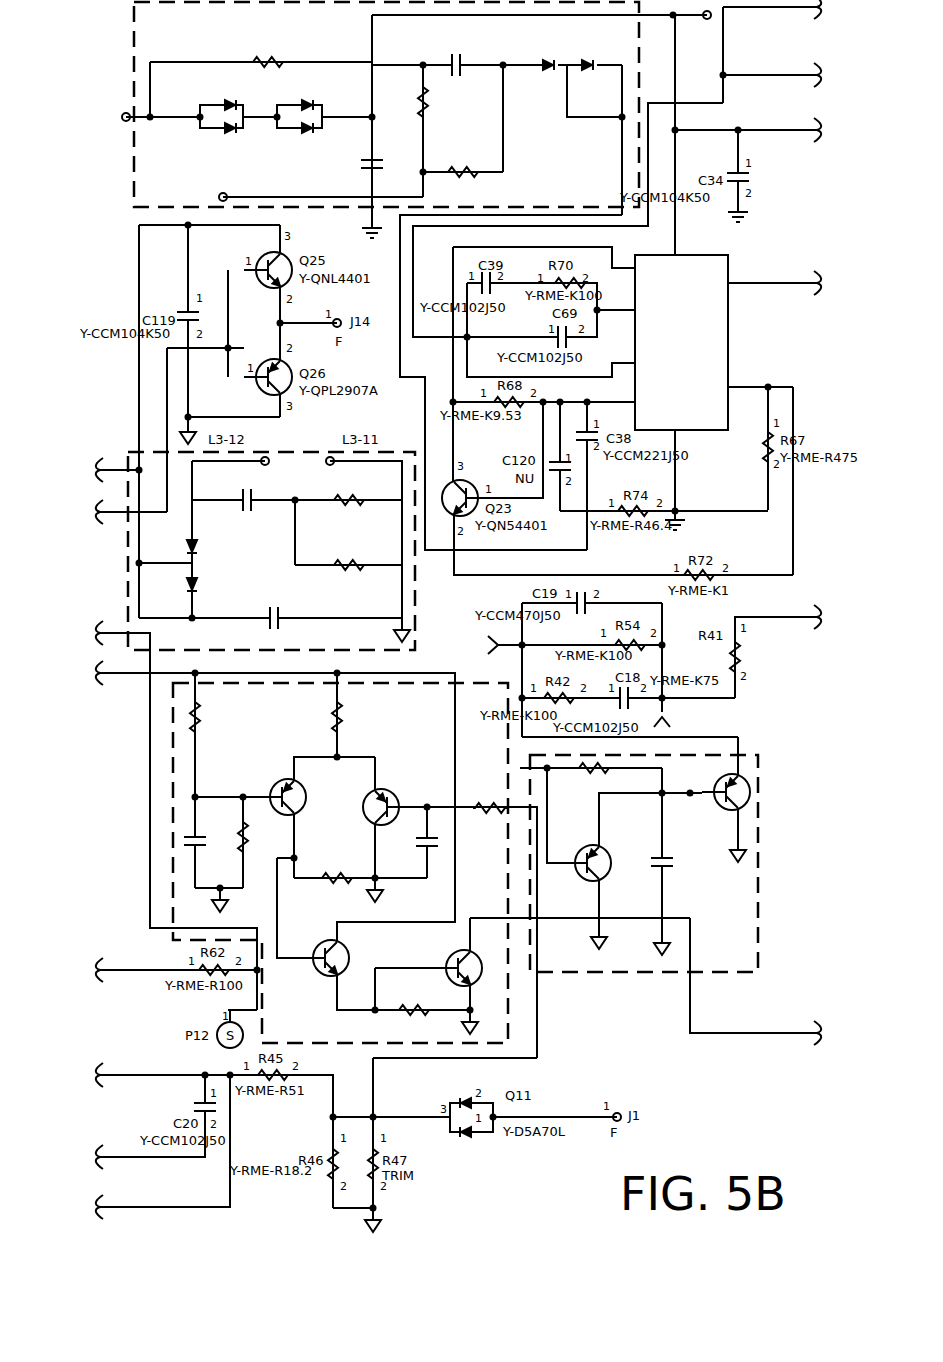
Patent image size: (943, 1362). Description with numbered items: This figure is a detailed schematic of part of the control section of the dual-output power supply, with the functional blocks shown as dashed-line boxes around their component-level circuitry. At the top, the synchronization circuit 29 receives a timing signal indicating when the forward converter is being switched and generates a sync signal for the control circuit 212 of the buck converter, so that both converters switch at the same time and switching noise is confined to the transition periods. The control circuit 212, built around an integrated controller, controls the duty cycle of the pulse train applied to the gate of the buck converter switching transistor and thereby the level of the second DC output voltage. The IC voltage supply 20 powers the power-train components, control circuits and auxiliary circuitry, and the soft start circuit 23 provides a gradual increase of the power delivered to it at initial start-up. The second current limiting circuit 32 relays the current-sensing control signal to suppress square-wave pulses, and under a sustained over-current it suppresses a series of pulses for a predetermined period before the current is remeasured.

The synchronization circuit 29 is at (150, 37).
The IC voltage supply 20 is at (383, 597).
The control circuit 212 is at (708, 418).
The second current limiting circuit 32 is at (503, 1030).
The soft start circuit 23 is at (628, 958).